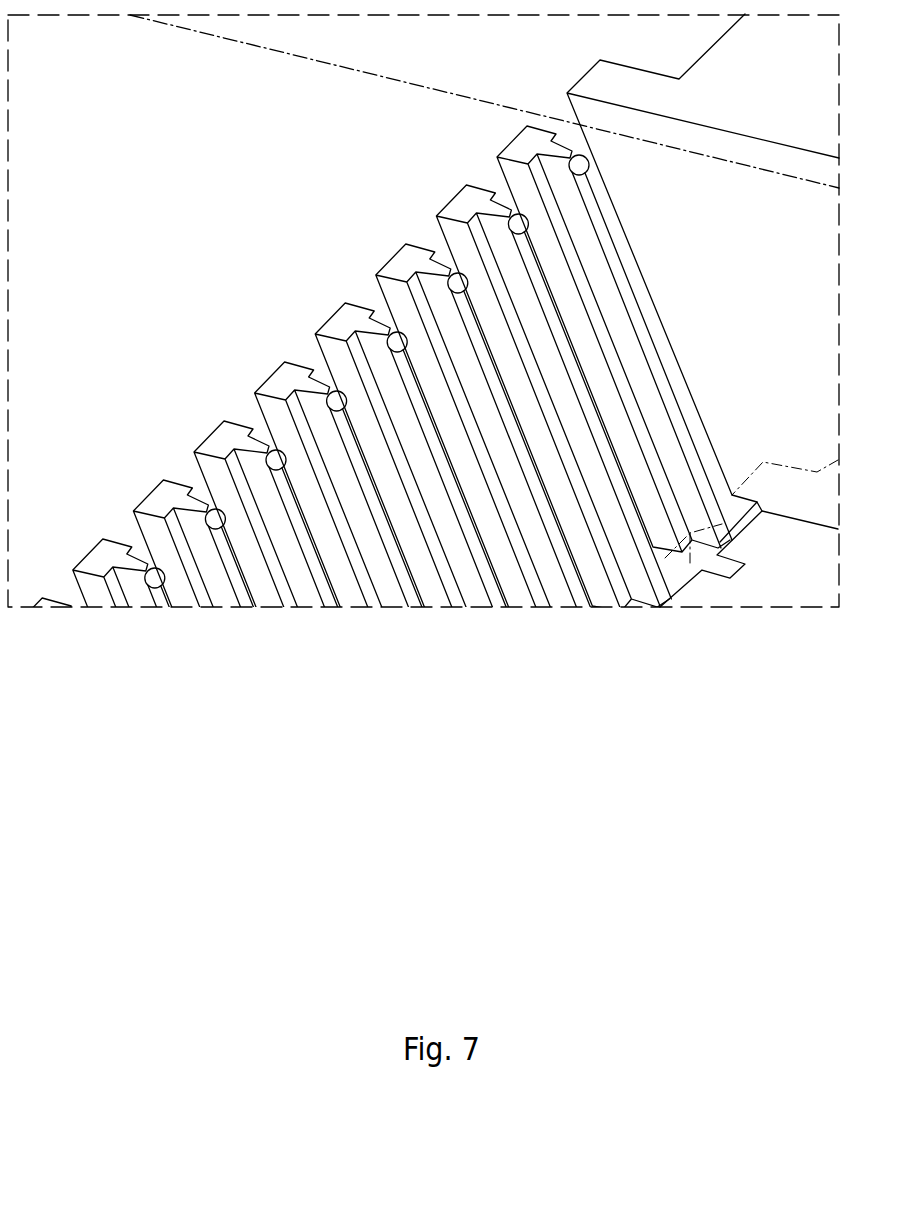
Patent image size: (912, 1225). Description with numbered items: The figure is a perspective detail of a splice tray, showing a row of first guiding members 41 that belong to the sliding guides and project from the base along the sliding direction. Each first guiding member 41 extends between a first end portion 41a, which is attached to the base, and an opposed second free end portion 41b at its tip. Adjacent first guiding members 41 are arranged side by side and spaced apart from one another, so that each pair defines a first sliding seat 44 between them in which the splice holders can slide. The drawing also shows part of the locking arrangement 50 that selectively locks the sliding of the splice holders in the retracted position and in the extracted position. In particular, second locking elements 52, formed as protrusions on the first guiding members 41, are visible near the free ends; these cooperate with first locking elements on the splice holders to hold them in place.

The first guiding member 41 is at (647, 298).
The first end portion 41a is at (742, 530).
The second free end portion 41b is at (524, 153).
The first sliding seat 44 is at (505, 211).
The locking arrangement 50 is at (366, 325).
The second locking element 52 is at (327, 392).